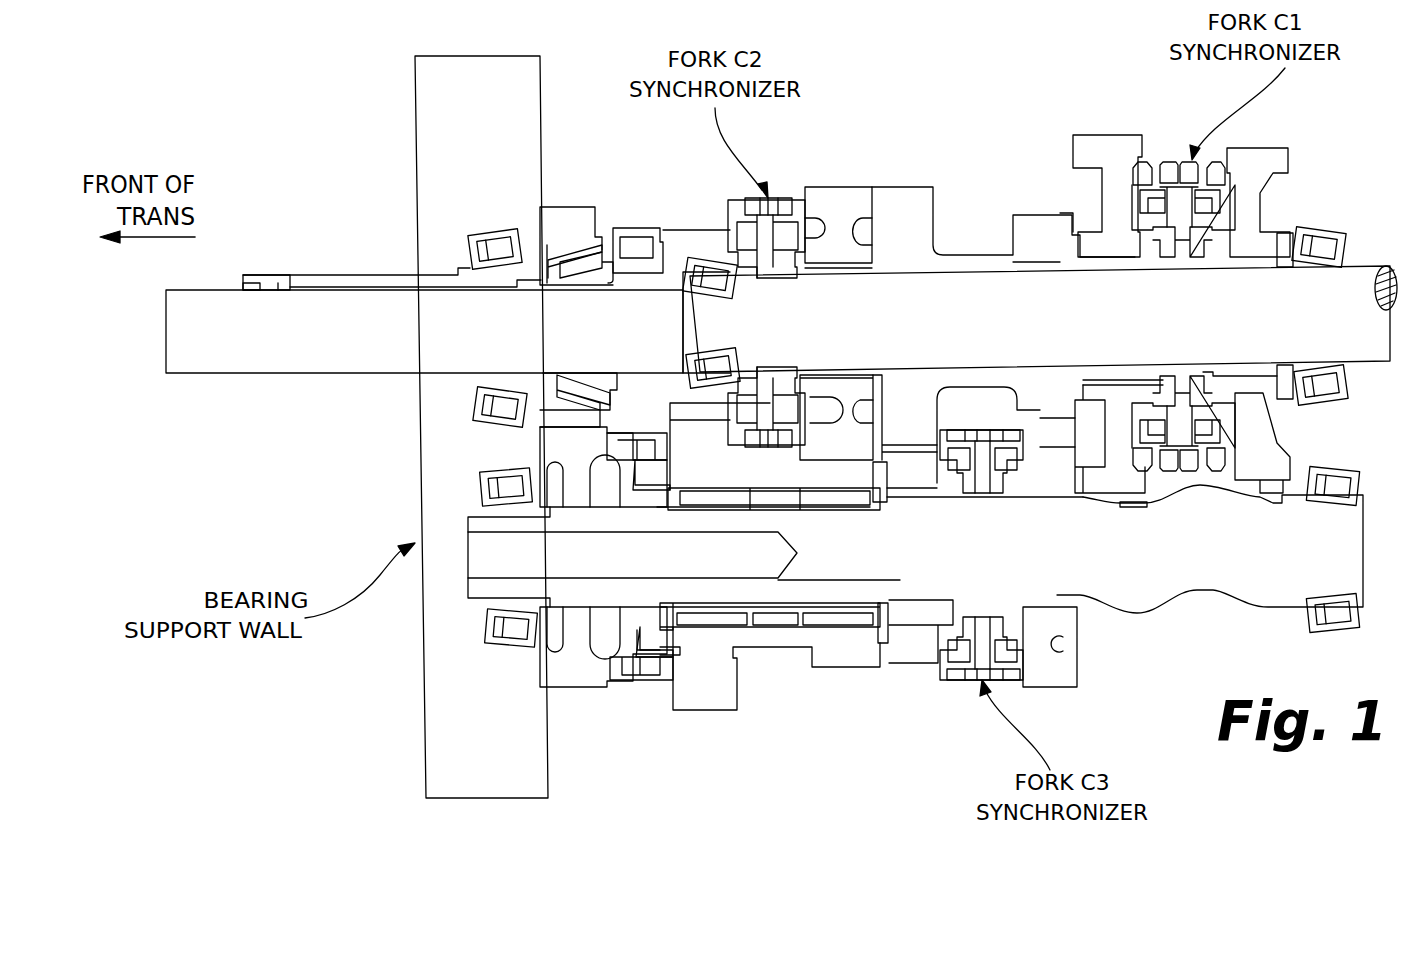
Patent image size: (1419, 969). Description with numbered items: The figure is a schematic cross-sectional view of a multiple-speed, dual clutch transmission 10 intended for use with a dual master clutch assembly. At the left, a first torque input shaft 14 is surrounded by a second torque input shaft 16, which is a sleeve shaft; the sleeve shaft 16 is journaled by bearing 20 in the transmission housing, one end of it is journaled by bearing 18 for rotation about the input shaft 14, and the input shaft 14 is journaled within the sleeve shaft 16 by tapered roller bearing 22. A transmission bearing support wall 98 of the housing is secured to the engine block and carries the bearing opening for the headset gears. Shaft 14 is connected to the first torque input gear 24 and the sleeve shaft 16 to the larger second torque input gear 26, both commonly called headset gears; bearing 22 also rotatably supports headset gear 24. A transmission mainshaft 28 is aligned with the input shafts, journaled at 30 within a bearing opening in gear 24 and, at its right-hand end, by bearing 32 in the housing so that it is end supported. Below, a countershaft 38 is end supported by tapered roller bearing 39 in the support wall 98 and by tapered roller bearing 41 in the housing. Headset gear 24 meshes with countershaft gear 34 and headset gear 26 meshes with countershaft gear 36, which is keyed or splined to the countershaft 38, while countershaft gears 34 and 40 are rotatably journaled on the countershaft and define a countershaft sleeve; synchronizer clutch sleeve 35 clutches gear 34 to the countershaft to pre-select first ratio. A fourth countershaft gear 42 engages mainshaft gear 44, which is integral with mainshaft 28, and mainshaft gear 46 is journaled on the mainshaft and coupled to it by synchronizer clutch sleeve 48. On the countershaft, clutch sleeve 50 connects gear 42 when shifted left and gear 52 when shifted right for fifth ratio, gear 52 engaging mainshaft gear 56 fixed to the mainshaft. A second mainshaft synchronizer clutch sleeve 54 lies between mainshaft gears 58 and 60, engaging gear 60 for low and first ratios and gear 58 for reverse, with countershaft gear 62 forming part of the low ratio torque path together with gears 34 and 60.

The transmission 10 is at (773, 695).
The first torque input shaft 14 is at (466, 336).
The second torque input shaft 16 is at (390, 270).
The bearing 18 is at (262, 275).
The bearing 20 is at (490, 240).
The tapered roller bearing 22 is at (582, 265).
The first transmission torque input gear 24 is at (684, 250).
The second transmission torque input gear 26 is at (563, 215).
The transmission mainshaft 28 is at (1103, 330).
The journal 30 is at (710, 298).
The bearing 32 is at (1318, 228).
The countershaft gear 34 is at (700, 453).
The synchronizer clutch sleeve 35 is at (652, 420).
The countershaft gear 36 is at (578, 493).
The countershaft 38 is at (948, 562).
The tapered roller bearing 39 is at (505, 488).
The countershaft gear 40 is at (840, 470).
The tapered roller bearing 41 is at (1333, 593).
The fourth countershaft gear 42 is at (912, 470).
The mainshaft gear 44 is at (906, 187).
The mainshaft gear 46 is at (842, 187).
The synchronizer clutch sleeve 48 is at (780, 198).
The synchronizer clutch sleeve 50 is at (993, 413).
The countershaft gear 52 is at (1032, 468).
The second mainshaft synchronizer clutch sleeve 54 is at (1173, 160).
The mainshaft gear 56 is at (1043, 213).
The mainshaft gear 58 is at (1290, 150).
The mainshaft gear 60 is at (1093, 137).
The countershaft gear 62 is at (1133, 510).
The transmission bearing support wall 98 is at (408, 108).